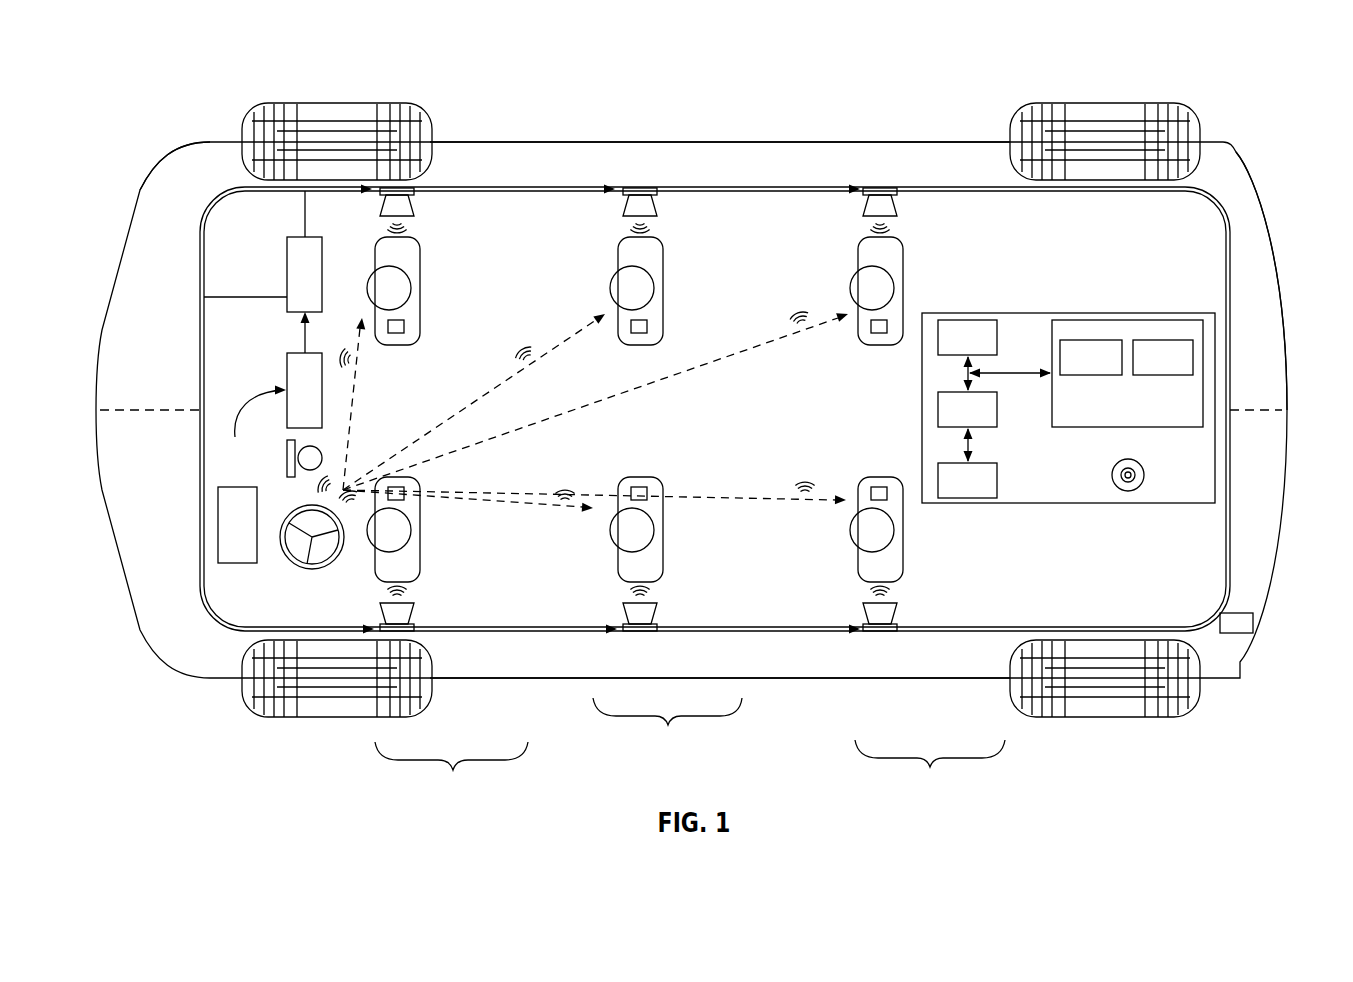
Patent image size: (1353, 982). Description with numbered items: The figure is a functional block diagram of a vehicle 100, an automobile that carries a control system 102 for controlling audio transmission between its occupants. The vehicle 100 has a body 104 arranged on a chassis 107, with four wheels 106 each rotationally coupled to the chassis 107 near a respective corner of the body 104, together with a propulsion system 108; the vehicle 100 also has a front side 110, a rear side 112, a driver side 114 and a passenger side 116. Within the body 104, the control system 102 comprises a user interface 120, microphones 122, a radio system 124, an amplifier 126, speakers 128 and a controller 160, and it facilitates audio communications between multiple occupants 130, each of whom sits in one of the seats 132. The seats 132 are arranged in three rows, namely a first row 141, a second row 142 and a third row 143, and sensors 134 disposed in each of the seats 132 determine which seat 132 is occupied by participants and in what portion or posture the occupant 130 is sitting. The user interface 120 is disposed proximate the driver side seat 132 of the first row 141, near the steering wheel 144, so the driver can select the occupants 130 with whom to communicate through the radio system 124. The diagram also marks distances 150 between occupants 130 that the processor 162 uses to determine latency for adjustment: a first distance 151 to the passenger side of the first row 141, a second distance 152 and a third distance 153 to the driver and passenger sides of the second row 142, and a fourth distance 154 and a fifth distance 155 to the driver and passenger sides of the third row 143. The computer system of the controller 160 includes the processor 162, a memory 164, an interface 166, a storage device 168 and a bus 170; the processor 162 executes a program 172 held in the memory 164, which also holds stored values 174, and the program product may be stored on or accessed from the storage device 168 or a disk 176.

The vehicle 100 is at (709, 402).
The control system 102 is at (215, 224).
The body 104 is at (820, 678).
The wheels 106 is at (340, 103).
The chassis 107 is at (152, 405).
The propulsion system 108 is at (1254, 625).
The front side 110 is at (152, 172).
The rear side 112 is at (1275, 228).
The driver side 114 is at (778, 690).
The passenger side 116 is at (598, 122).
The user interface 120 is at (240, 563).
The microphones 122 is at (287, 450).
The radio system 124 is at (287, 378).
The amplifier 126 is at (287, 272).
The speakers 128 is at (412, 207).
The occupants 130 is at (380, 287).
The seats 132 is at (410, 250).
The sensors 134 is at (405, 322).
The first row 141 is at (451, 772).
The second row 142 is at (667, 730).
The third row 143 is at (930, 768).
The steering wheel 144 is at (316, 569).
The distances 150 is at (582, 437).
The first distance 151 is at (368, 375).
The second distance 152 is at (525, 515).
The third distance 153 is at (498, 382).
The fourth distance 154 is at (772, 492).
The fifth distance 155 is at (768, 350).
The controller 160 is at (1046, 406).
The processor 162 is at (970, 320).
The memory 164 is at (1135, 342).
The interface 166 is at (938, 420).
The storage device 168 is at (938, 485).
The bus 170 is at (962, 380).
The program 172 is at (1080, 340).
The stored values 174 is at (1165, 340).
The disk 176 is at (1125, 490).